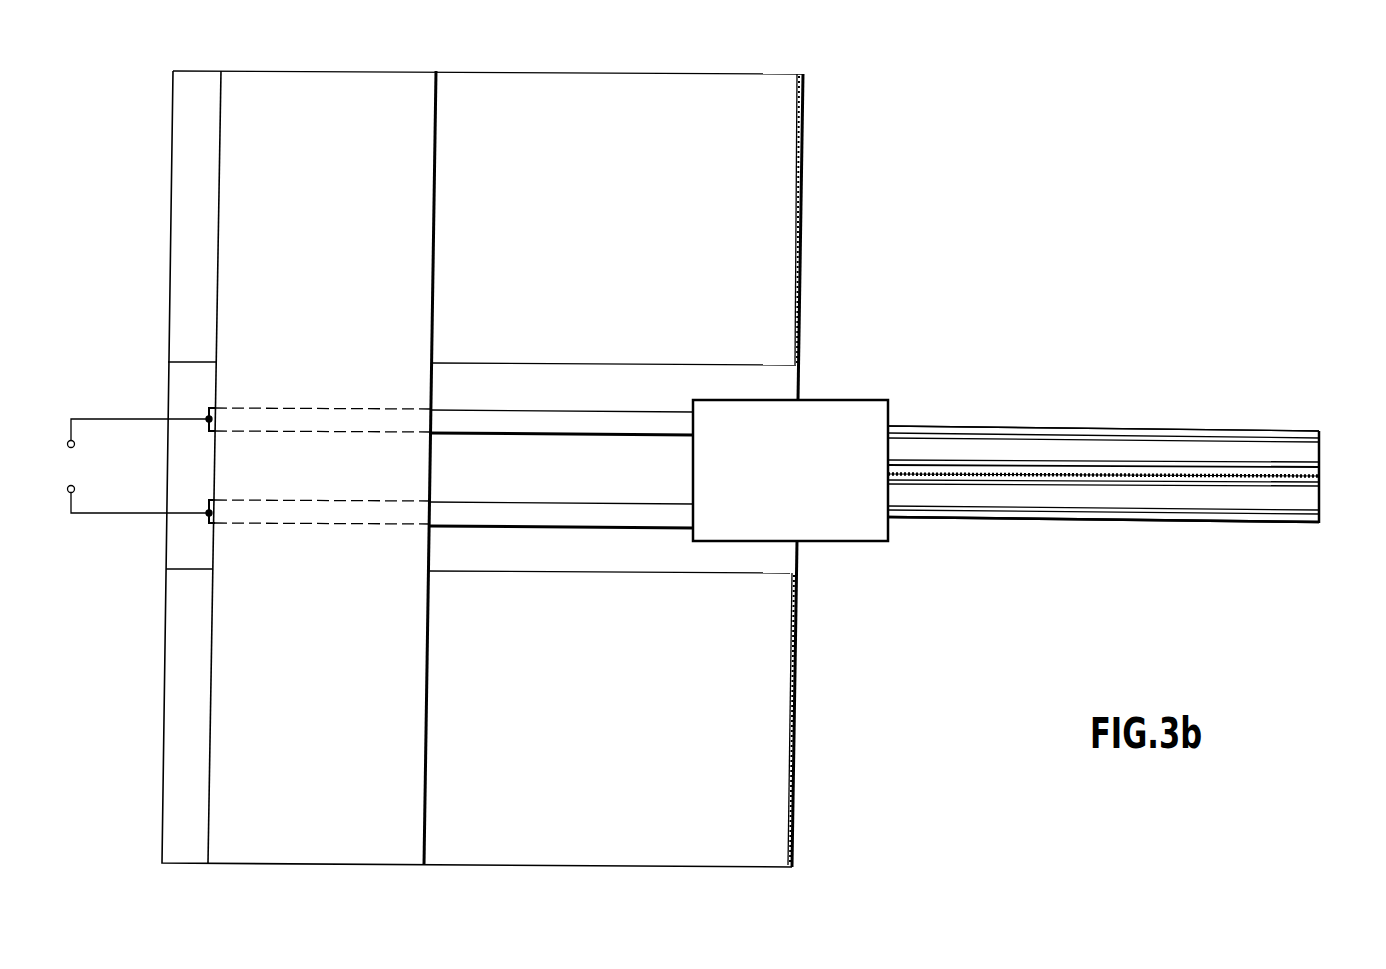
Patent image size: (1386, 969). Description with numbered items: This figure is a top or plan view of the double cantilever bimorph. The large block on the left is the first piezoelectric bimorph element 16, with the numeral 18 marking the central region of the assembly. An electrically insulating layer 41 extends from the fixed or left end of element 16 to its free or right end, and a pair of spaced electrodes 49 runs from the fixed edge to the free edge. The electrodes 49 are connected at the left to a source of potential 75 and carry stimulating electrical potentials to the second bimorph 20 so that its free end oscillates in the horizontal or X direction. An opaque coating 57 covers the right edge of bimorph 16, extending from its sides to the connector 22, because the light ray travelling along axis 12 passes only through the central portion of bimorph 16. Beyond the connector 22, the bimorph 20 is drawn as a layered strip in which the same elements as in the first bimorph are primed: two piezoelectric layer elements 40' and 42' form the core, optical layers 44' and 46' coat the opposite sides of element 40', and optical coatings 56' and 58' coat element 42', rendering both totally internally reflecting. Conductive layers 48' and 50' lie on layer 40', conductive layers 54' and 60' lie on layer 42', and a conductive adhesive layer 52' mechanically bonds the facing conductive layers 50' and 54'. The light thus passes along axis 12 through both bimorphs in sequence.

The first piezoelectric bimorph element 16 is at (613, 869).
The upper substrate block 18 is at (326, 249).
The electrically insulating layer 41 is at (186, 378).
The opaque coating 57 is at (801, 263).
The spaced electrodes 49 is at (563, 421).
The source of potential 75 is at (65, 485).
The axis 12 is at (152, 465).
The connector 22 is at (843, 411).
The bimorph 20 is at (1194, 413).
The conductive layer 48' is at (1103, 408).
The optical layer 44' is at (1103, 412).
The piezoelectric bimorph layer element 40' is at (1103, 418).
The optical layer 46' is at (1103, 428).
The conductive layer 50' is at (1103, 432).
The conductive adhesive layer 52' is at (1108, 435).
The conductive layer 54' is at (1103, 516).
The optical coating 56' is at (1103, 520).
The piezoelectric bimorph layer element 42' is at (1103, 528).
The optical coating 58' is at (1103, 535).
The conductive layer 60' is at (1103, 539).